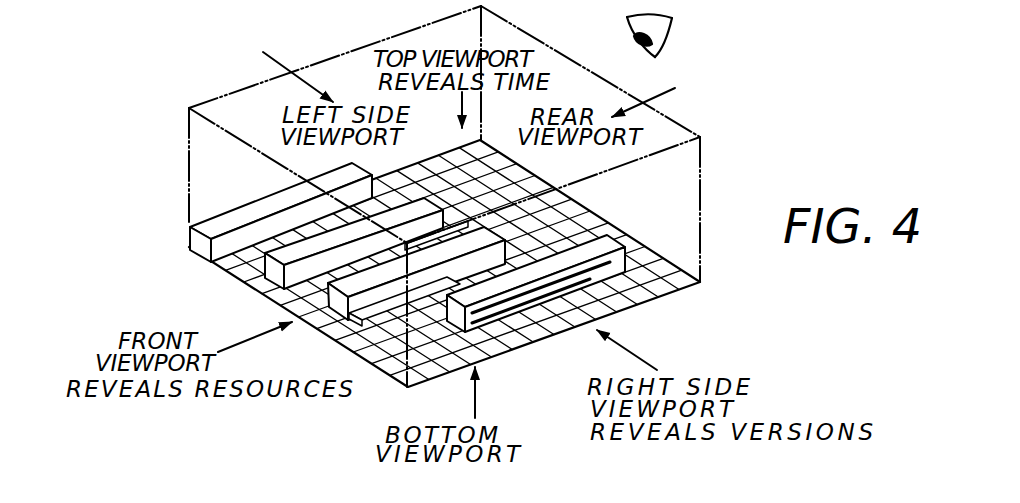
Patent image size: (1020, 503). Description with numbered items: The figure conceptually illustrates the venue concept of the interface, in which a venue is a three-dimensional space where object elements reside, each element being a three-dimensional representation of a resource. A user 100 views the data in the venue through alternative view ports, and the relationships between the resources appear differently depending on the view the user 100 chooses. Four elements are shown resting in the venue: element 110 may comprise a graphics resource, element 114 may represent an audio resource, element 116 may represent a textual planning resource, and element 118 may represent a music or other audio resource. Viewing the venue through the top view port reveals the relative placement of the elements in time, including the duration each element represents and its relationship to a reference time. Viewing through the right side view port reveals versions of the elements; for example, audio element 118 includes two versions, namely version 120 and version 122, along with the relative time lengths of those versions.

The user 100 is at (672, 22).
The element 110 is at (198, 245).
The element 114 is at (271, 270).
The element 116 is at (340, 304).
The element 118 is at (453, 320).
The version 120 is at (512, 291).
The version 122 is at (567, 284).